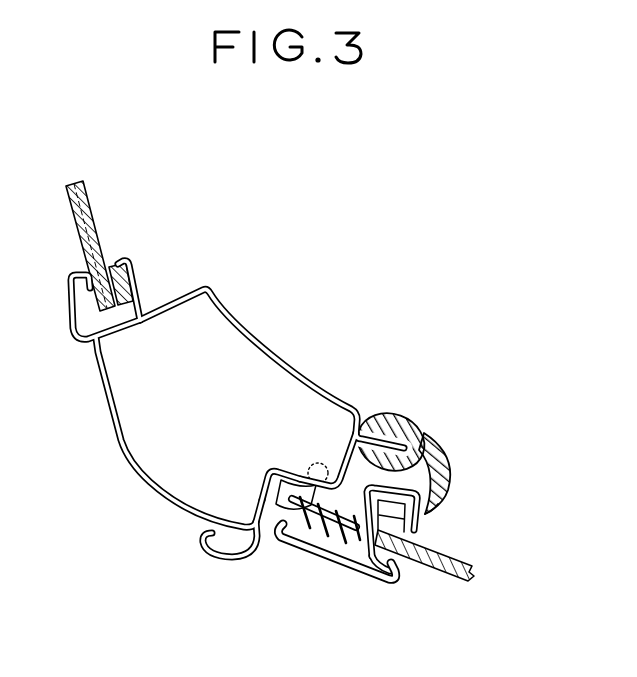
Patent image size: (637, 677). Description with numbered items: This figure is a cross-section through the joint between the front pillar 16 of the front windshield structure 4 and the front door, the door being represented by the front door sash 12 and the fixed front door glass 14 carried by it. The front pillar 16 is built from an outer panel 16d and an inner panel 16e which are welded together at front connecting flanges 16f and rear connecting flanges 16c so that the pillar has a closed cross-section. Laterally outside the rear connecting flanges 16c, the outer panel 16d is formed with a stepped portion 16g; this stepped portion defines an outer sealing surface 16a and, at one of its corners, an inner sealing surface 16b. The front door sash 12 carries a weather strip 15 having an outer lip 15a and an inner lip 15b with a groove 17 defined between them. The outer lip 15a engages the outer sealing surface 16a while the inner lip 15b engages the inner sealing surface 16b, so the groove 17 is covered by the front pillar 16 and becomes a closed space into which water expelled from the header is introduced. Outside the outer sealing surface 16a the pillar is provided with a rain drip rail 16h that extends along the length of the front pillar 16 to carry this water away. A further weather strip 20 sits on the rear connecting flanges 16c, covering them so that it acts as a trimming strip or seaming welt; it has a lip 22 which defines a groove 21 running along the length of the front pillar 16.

The front windshield structure 4 is at (73, 237).
The front door sash 12 is at (340, 565).
The fixed front door glass 14 is at (436, 572).
The weather strip 15 is at (314, 510).
The outer lip 15a is at (272, 537).
The inner lip 15b is at (293, 470).
The front pillar 16 is at (238, 425).
The outer sealing surface 16a is at (263, 503).
The inner sealing surface 16b is at (338, 470).
The rear connecting flanges 16c is at (372, 415).
The outer panel 16d is at (148, 486).
The inner panel 16e is at (270, 352).
The front connecting flanges 16f is at (138, 271).
The stepped portion 16g is at (250, 482).
The rain drip rail 16h is at (206, 547).
The groove 17 is at (287, 493).
The weather strip 20 is at (423, 433).
The groove 21 is at (449, 478).
The lip 22 is at (437, 508).